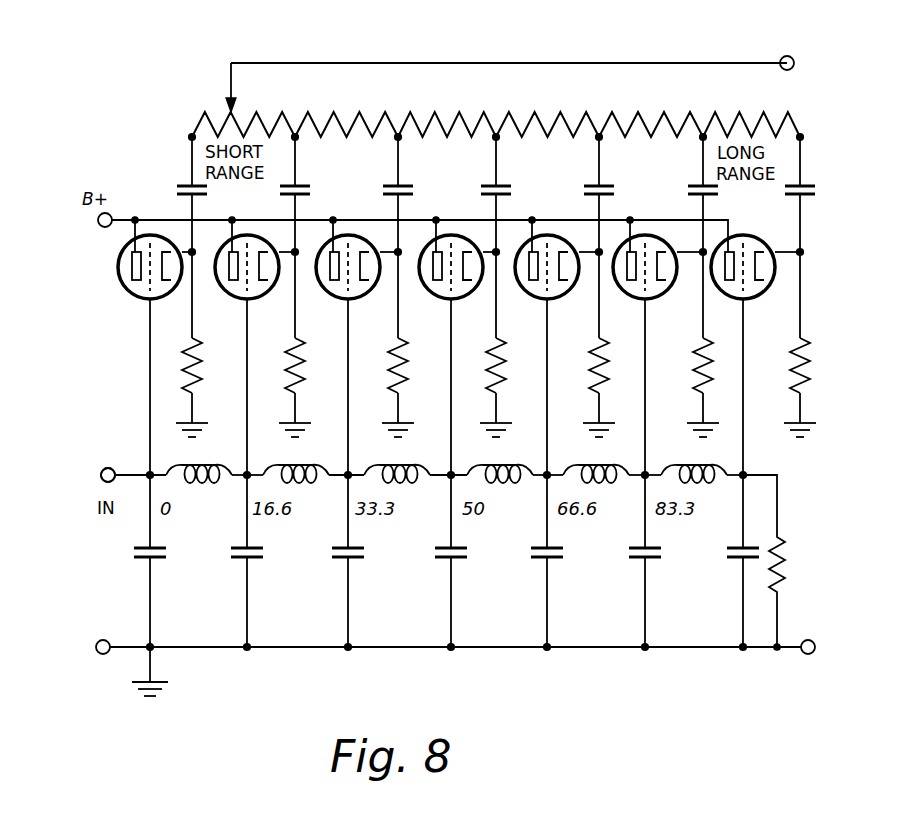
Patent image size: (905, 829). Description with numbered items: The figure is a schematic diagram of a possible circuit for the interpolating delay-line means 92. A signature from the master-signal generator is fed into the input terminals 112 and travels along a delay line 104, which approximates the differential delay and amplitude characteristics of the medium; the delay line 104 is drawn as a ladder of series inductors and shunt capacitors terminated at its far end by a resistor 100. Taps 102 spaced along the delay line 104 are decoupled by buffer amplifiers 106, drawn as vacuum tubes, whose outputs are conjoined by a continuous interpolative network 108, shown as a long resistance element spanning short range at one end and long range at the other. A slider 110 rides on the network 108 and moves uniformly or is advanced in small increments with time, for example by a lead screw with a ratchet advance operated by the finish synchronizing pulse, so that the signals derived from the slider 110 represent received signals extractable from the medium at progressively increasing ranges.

The interpolating delay-line means 92 is at (566, 42).
The terminating resistor 100 is at (772, 549).
The taps 102 is at (147, 470).
The delay line 104 is at (138, 592).
The buffer amplifiers 106 is at (124, 300).
The continuous interpolative network 108 is at (372, 113).
The slider 110 is at (238, 104).
The input terminals 112 is at (96, 477).